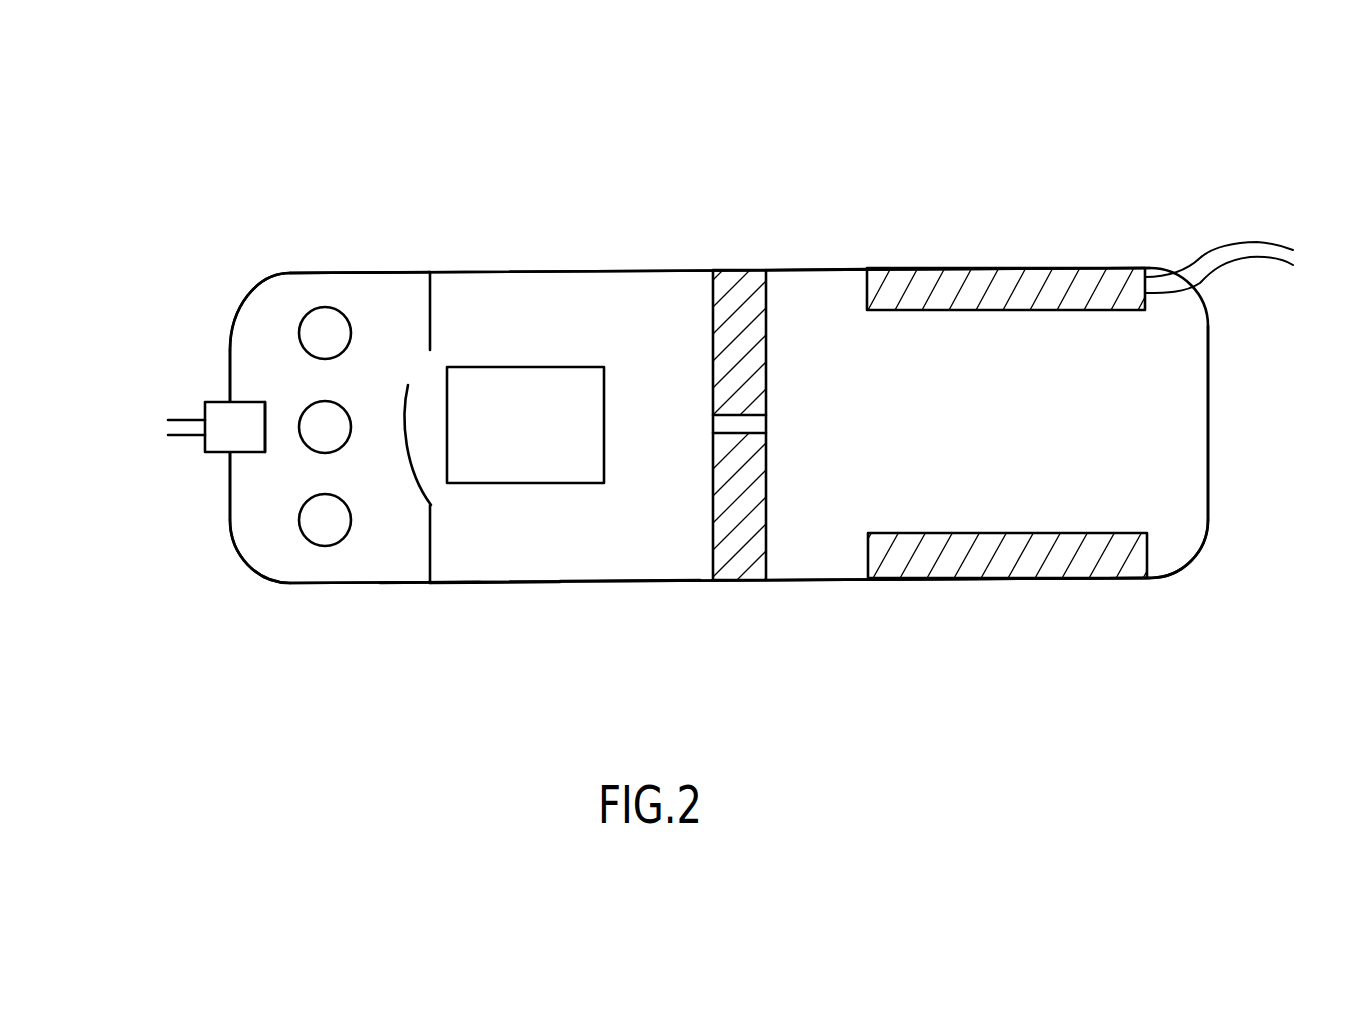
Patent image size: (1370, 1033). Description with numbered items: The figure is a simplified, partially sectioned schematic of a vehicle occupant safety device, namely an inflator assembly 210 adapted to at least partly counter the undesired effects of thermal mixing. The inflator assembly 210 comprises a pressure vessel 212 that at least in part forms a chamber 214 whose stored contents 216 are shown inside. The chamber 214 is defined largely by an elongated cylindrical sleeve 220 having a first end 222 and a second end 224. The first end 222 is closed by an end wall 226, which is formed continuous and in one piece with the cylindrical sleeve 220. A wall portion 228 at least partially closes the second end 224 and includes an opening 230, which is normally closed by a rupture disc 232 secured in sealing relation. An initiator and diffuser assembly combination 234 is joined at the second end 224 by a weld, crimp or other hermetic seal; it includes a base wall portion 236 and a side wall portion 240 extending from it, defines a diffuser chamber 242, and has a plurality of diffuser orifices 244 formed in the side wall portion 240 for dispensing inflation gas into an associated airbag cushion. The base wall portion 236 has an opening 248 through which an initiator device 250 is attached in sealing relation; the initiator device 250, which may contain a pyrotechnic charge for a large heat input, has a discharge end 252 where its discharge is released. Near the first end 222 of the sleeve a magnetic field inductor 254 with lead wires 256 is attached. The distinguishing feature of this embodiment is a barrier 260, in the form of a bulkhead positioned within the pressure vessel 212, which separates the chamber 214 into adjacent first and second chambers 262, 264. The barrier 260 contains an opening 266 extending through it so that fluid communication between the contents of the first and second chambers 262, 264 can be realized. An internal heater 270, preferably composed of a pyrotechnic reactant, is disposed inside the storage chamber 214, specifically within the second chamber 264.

The inflator assembly 210 is at (893, 184).
The pressure vessel 212 is at (641, 258).
The chamber 214 is at (546, 582).
The contents 216 is at (640, 537).
The elongated cylindrical sleeve 220 is at (778, 582).
The first end 222 is at (1184, 598).
The second end 224 is at (432, 603).
The end wall 226 is at (1208, 435).
The wall portion 228 is at (430, 545).
The opening 230 is at (447, 334).
The rupture disc 232 is at (408, 385).
The initiator and diffuser assembly combination 234 is at (268, 252).
The base wall portion 236 is at (230, 353).
The side wall portion 240 is at (327, 584).
The diffuser chamber 242 is at (268, 333).
The diffuser orifices 244 is at (307, 540).
The opening 248 is at (226, 402).
The initiator device 250 is at (230, 432).
The discharge end 252 is at (265, 432).
The magnetic field inductor 254 is at (993, 284).
The lead wires 256 is at (1221, 247).
The barrier 260 is at (737, 295).
The first chamber 262 is at (804, 300).
The second chamber 264 is at (500, 547).
The opening 266 is at (740, 434).
The internal heater 270 is at (510, 438).